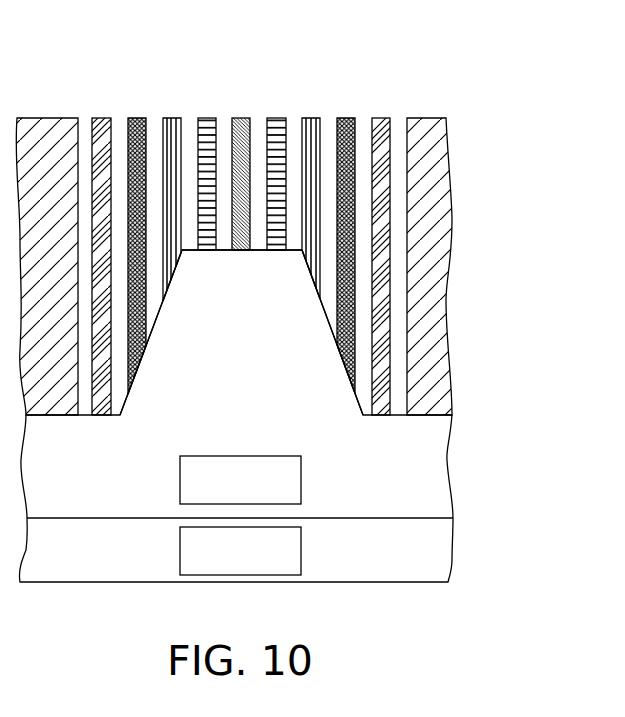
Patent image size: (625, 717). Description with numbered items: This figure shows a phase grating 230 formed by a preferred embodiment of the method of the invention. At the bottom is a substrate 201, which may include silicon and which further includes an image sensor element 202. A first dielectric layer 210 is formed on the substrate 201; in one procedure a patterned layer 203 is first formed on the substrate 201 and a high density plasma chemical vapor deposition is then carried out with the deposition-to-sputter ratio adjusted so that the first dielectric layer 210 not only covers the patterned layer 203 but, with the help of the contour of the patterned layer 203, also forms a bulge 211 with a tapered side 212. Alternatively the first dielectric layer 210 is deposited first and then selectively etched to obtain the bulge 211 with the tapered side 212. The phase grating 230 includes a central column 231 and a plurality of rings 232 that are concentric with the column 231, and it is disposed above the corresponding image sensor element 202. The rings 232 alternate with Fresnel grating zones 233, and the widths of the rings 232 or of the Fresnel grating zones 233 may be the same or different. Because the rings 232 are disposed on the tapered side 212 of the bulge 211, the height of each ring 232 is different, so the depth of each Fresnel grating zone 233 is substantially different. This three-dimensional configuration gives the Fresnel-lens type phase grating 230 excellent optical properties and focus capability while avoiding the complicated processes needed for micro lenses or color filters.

The substrate 201 is at (363, 565).
The image sensor element 202 is at (220, 567).
The patterned layer 203 is at (220, 494).
The first dielectric layer 210 is at (363, 491).
The bulge 211 is at (236, 274).
The tapered side 212 is at (314, 354).
The phase grating 230 is at (487, 133).
The column 231 is at (241, 118).
The rings 232 is at (137, 118).
The Fresnel grating zones 233 is at (289, 106).